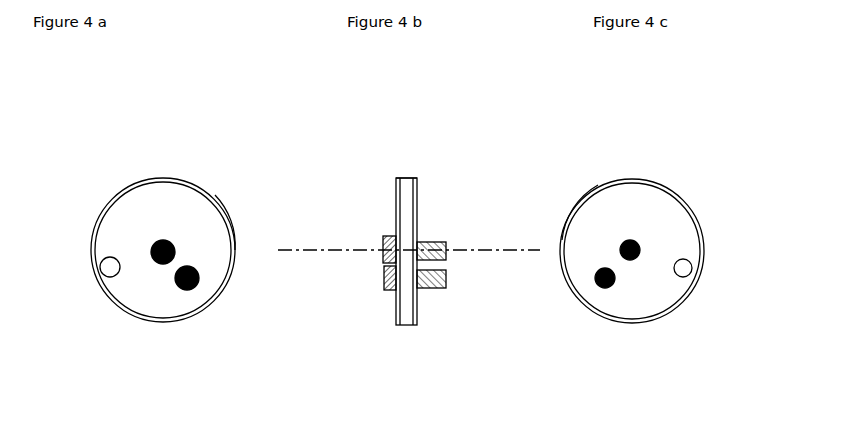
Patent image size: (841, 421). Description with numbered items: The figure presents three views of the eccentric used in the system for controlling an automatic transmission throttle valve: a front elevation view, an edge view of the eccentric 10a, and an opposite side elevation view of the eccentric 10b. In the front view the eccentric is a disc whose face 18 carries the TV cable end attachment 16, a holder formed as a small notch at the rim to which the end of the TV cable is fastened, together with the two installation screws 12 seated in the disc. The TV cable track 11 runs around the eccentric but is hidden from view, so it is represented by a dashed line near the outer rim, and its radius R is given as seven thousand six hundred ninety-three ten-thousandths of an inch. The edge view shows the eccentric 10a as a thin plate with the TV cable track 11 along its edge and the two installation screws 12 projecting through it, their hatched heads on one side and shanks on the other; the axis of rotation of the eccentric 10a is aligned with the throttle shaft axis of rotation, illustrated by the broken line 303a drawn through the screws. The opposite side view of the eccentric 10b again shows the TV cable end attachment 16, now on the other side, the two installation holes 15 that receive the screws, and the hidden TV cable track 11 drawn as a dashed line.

In FIG. 4b, the eccentric 10a is at (416, 182).
In FIG. 4c, the eccentric 10b is at (637, 198).
In FIG. 4a, the TV cable track 11 is at (215, 195).
In FIG. 4b, the TV cable track 11 is at (326, 150).
In FIG. 4c, the TV cable track 11 is at (598, 185).
In FIG. 4a, the installation screws 12 is at (175, 248).
In FIG. 4b, the installation screws 12 is at (385, 272).
In FIG. 4c, the installation holes 15 is at (690, 270).
In FIG. 4a, the TV cable end attachment 16 is at (101, 270).
In FIG. 4a, the disc face 18 is at (153, 210).
In FIG. 4b, the broken line 303a is at (313, 252).
In FIG. 4a, the radius dimension R .7693 R is at (222, 151).